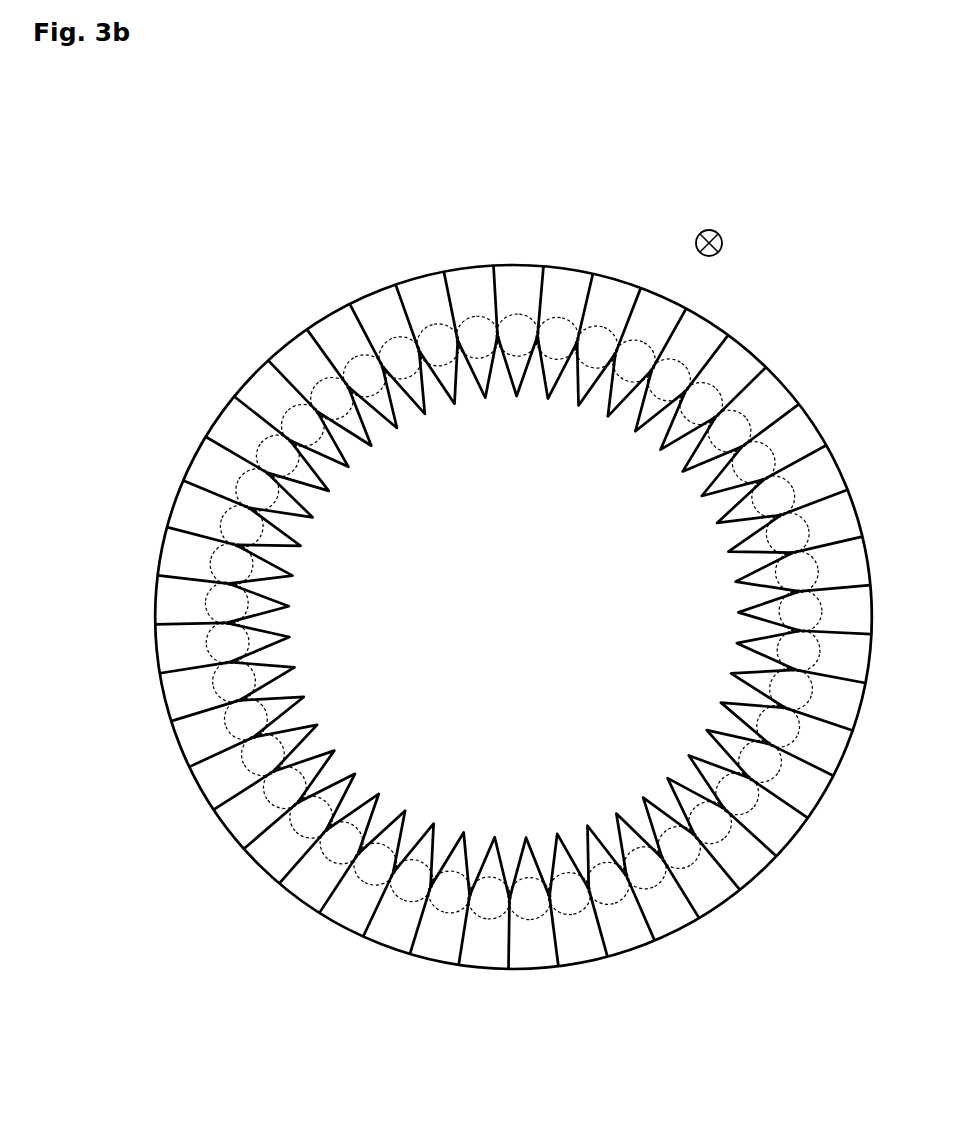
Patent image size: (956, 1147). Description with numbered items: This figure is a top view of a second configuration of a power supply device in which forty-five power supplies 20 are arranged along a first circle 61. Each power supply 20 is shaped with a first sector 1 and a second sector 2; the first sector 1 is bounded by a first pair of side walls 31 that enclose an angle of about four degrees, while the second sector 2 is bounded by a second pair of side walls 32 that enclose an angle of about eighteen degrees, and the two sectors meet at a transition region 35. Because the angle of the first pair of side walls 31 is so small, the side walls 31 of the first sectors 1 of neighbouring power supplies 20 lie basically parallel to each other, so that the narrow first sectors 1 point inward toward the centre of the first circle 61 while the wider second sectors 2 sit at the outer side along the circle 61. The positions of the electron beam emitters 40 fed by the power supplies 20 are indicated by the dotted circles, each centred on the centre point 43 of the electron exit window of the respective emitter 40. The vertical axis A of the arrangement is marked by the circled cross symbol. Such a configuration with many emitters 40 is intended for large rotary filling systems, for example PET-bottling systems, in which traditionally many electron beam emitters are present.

The first sector 1 is at (343, 330).
The second sector 2 is at (318, 395).
The power supply 20 is at (533, 240).
The first pair of side walls 31 is at (315, 347).
The second pair of side walls 32 is at (305, 402).
The transition region 35 is at (516, 335).
The electron beam emitter 40 is at (565, 315).
The centre point of electron exit window 43 is at (478, 337).
The first circle 61 is at (375, 298).
The vertical axis A is at (722, 233).